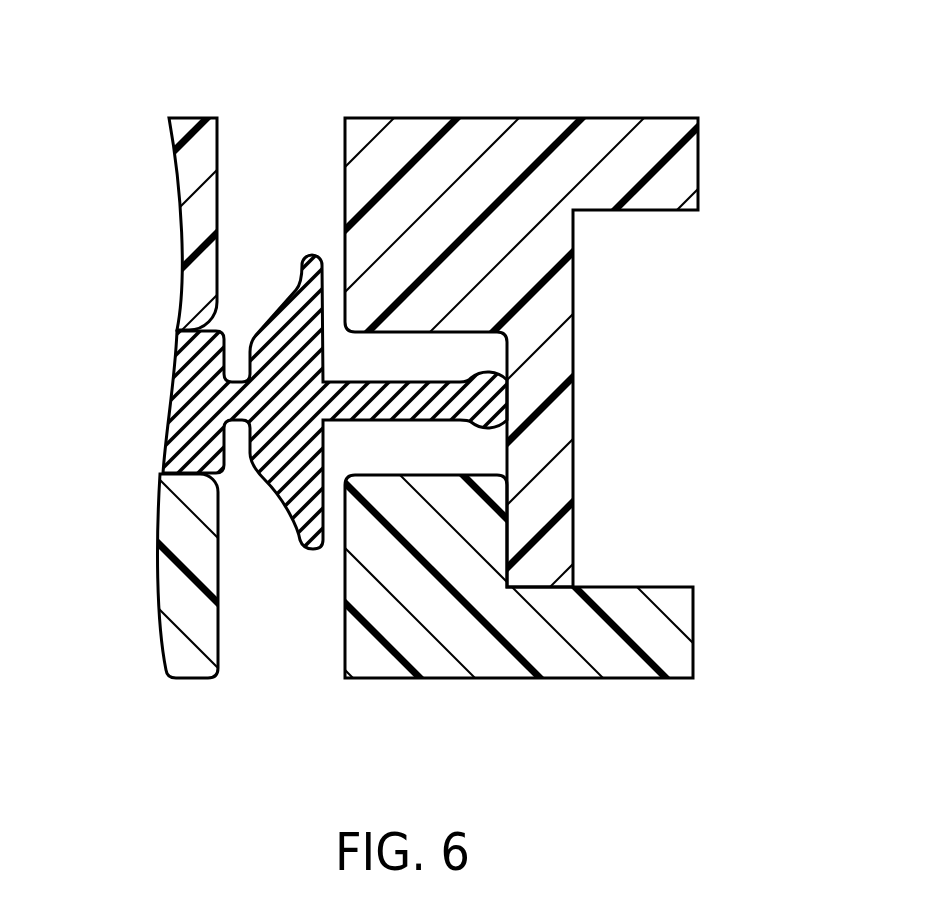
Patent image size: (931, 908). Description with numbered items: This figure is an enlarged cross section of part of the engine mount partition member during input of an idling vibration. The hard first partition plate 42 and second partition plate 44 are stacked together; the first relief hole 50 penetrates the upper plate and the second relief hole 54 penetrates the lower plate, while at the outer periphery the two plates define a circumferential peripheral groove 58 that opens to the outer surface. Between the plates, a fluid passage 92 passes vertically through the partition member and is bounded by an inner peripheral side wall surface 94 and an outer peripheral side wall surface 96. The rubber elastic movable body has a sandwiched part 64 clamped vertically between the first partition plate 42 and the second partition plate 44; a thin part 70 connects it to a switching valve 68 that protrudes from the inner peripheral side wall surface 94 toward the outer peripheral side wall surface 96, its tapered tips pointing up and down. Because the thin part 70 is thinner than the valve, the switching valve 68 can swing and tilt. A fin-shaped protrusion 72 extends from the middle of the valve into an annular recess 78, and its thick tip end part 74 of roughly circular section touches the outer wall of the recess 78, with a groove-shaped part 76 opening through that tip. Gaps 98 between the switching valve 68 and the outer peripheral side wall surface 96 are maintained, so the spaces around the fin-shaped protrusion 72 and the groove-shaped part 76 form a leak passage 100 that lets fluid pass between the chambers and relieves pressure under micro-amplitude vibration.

The first partition plate 42 is at (507, 170).
The second partition plate 44 is at (530, 650).
The first relief hole 50 is at (221, 159).
The second relief hole 54 is at (222, 628).
The peripheral groove 58 is at (658, 587).
The sandwiched part 64 is at (195, 377).
The switching valve 68 is at (297, 347).
The thin part 70 is at (237, 407).
The fin-shaped protrusion 72 is at (414, 407).
The thick tip end part 74 is at (470, 413).
The groove-shaped part 76 is at (488, 402).
The recess 78 is at (468, 332).
The fluid passage 92 is at (297, 648).
The inner peripheral side wall surface 94 is at (346, 146).
The outer peripheral side wall surface 96 is at (218, 527).
The gap 98 is at (338, 275).
The leak passage 100 is at (400, 355).